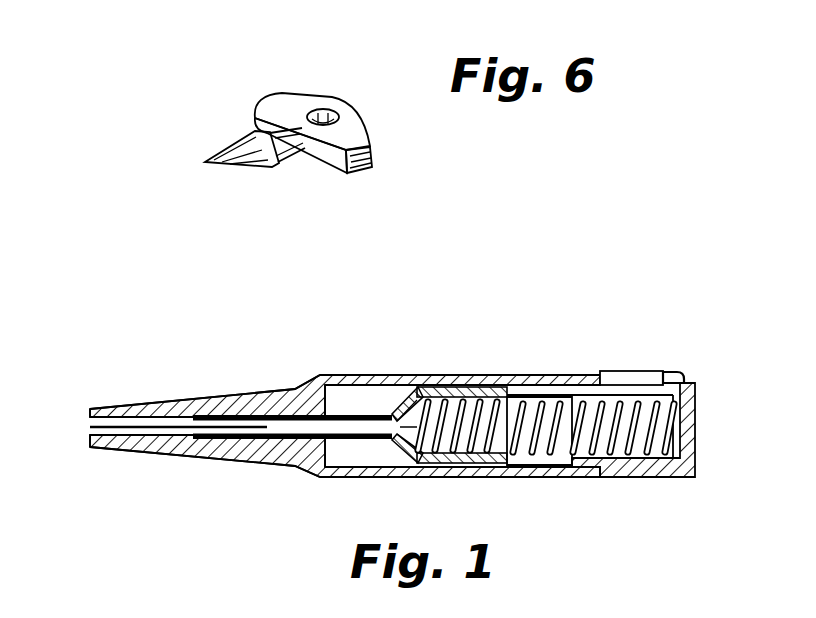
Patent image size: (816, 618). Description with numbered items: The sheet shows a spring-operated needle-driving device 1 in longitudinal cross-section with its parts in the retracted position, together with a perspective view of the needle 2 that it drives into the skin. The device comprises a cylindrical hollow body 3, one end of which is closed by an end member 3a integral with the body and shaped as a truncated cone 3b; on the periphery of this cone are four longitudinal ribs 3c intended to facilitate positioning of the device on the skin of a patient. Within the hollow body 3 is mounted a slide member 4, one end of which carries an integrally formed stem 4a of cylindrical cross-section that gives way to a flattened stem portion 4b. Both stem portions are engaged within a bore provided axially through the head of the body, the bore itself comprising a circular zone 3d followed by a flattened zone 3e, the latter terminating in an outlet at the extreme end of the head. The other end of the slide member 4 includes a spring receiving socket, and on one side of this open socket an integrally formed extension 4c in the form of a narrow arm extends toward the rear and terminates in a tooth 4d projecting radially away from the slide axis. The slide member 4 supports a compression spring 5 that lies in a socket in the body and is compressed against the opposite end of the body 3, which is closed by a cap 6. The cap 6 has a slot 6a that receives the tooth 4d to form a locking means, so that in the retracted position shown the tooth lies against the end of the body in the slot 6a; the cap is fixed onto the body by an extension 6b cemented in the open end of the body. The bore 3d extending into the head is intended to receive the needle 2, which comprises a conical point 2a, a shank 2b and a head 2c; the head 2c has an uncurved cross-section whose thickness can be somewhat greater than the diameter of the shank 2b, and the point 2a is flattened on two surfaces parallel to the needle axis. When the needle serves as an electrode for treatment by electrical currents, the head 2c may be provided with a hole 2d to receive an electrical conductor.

In FIG. 1, the device 1 is at (439, 363).
In FIG. 6, the needle 2 is at (278, 84).
In FIG. 1, the needle 2 is at (170, 432).
In FIG. 6, the conical point 2a is at (233, 158).
In FIG. 6, the shank 2b is at (291, 149).
In FIG. 6, the head 2c is at (362, 135).
In FIG. 6, the hole 2d is at (328, 110).
In FIG. 1, the cylindrical hollow body 3 is at (315, 460).
In FIG. 1, the end member 3a is at (318, 378).
In FIG. 1, the truncated cone 3b is at (258, 450).
In FIG. 1, the longitudinal ribs 3c is at (128, 405).
In FIG. 1, the circular zone 3d is at (219, 440).
In FIG. 1, the flattened zone 3e is at (92, 428).
In FIG. 1, the slide member 4 is at (458, 429).
In FIG. 1, the stem 4a is at (350, 432).
In FIG. 1, the flattened stem portion 4b is at (231, 414).
In FIG. 1, the extension 4c is at (524, 394).
In FIG. 1, the tooth 4d is at (664, 372).
In FIG. 1, the compression spring 5 is at (647, 455).
In FIG. 1, the cap 6 is at (666, 485).
In FIG. 1, the slot 6a is at (700, 378).
In FIG. 1, the extension 6b is at (575, 468).